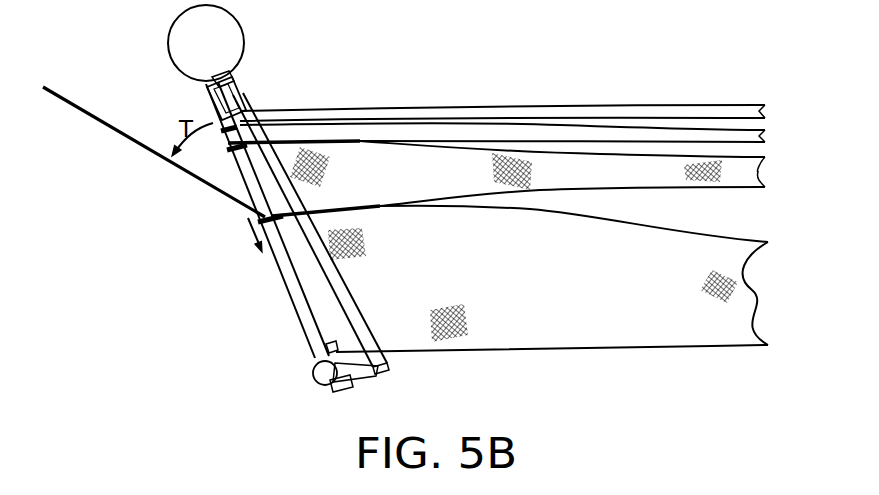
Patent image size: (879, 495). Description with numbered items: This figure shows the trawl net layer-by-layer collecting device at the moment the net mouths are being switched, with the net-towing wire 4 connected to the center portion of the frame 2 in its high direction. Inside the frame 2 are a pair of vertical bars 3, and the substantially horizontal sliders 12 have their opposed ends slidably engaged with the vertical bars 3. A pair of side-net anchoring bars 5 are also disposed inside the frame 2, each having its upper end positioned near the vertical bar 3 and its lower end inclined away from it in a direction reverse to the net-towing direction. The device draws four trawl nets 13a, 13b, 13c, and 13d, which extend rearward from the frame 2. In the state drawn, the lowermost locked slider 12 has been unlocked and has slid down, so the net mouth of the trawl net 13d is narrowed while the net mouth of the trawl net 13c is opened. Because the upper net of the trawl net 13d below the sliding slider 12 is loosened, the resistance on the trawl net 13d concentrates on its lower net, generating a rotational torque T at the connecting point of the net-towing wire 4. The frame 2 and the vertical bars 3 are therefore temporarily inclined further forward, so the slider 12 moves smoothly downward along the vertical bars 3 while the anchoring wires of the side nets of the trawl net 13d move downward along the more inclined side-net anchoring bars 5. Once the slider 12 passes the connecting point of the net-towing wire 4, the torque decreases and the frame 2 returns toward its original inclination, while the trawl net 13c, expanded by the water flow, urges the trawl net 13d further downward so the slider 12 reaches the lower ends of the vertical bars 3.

The frame 2 is at (230, 81).
The vertical bar 3 is at (212, 114).
The net-towing wire 4 is at (80, 106).
The side-net anchoring bar 5 is at (346, 288).
The slider 12 is at (248, 111).
The trawl net 13a is at (717, 106).
The trawl net 13b is at (768, 134).
The trawl net 13c is at (762, 172).
The trawl net 13d is at (740, 289).